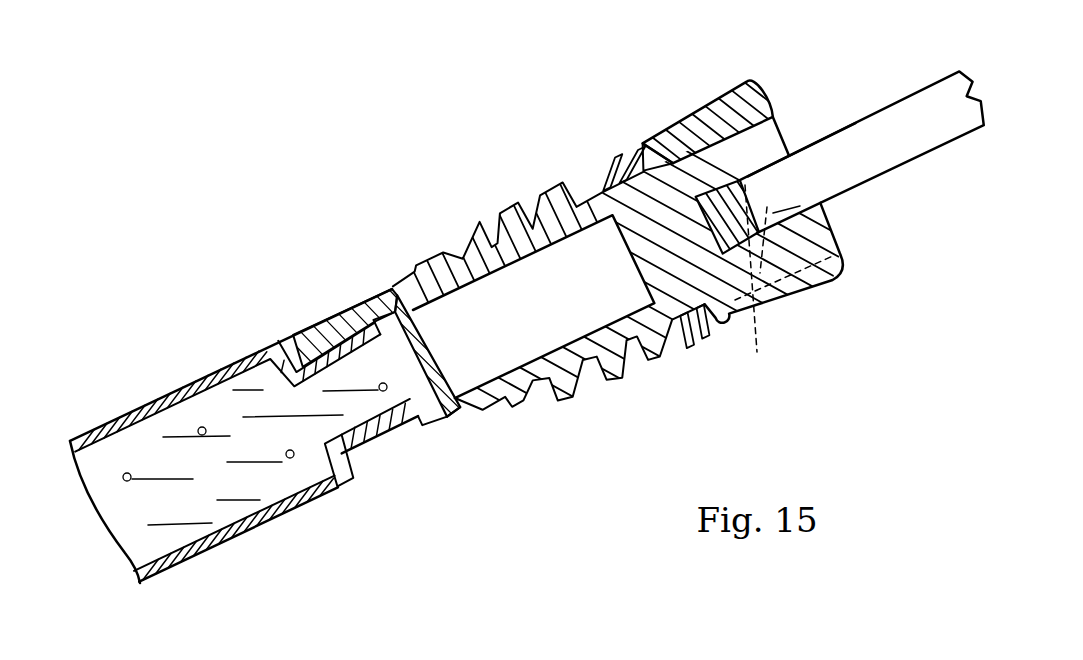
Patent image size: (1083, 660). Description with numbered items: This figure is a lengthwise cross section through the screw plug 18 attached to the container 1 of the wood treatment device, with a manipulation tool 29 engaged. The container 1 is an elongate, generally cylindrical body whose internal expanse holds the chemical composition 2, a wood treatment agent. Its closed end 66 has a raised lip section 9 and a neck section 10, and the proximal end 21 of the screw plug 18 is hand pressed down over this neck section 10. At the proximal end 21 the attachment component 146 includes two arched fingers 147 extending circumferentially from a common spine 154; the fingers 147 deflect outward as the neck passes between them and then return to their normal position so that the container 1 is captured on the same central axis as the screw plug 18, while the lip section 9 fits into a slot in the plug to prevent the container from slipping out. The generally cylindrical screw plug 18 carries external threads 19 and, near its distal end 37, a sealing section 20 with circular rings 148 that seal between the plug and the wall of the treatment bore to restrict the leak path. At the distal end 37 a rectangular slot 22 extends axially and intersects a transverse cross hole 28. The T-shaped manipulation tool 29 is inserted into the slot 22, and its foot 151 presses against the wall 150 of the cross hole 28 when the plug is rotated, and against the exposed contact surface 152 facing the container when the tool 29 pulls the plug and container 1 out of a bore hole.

The container 1 is at (186, 386).
The chemical composition 2 is at (280, 388).
The common spine 154 is at (312, 324).
The neck section 10 is at (350, 327).
The attachment component 146 is at (357, 277).
The external threads 19 is at (407, 225).
The closed end 66 is at (467, 430).
The circular rings 148 is at (604, 158).
The sealing section 20 is at (699, 360).
The distal end 37 is at (847, 222).
The wall 150 is at (794, 142).
The foot 151 is at (800, 206).
The manipulation tool 29 is at (896, 103).
The slot 22 is at (800, 140).
The screw plug 18 is at (710, 180).
The cross hole 28 is at (707, 160).
The exposed contact surface 152 is at (785, 279).
The arched fingers 147 is at (390, 442).
The proximal end 21 is at (368, 494).
The lip section 9 is at (440, 432).